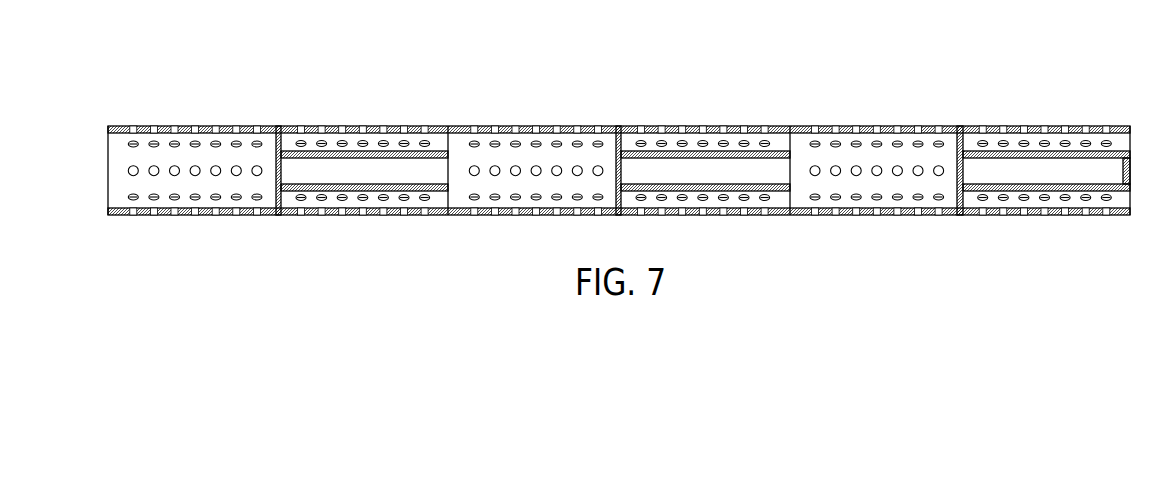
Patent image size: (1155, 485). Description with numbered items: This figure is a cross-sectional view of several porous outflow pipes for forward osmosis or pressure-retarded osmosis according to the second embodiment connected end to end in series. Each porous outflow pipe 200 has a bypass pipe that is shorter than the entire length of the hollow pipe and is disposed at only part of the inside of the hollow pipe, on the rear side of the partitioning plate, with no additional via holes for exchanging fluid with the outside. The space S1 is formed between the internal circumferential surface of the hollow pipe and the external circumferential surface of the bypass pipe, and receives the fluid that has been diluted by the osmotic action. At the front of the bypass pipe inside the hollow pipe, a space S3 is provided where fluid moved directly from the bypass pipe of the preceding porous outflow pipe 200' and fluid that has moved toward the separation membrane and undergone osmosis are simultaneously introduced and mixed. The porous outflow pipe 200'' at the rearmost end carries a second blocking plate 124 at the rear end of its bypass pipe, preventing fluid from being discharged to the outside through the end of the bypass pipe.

The porous outflow pipe for osmosis 200 is at (550, 113).
The porous outflow pipe 200' is at (210, 113).
The porous outflow pipe 200'' is at (895, 113).
The space S1 is at (435, 144).
The space S3 is at (522, 160).
The second blocking plate 124 is at (1123, 170).